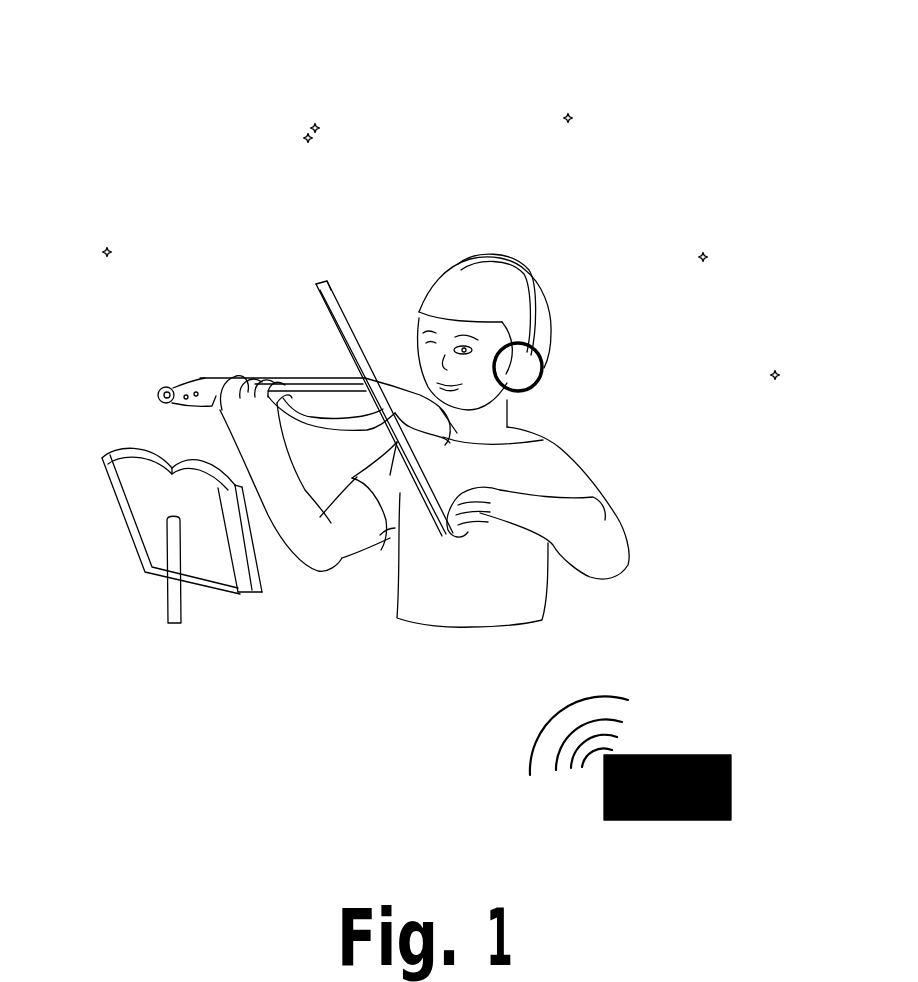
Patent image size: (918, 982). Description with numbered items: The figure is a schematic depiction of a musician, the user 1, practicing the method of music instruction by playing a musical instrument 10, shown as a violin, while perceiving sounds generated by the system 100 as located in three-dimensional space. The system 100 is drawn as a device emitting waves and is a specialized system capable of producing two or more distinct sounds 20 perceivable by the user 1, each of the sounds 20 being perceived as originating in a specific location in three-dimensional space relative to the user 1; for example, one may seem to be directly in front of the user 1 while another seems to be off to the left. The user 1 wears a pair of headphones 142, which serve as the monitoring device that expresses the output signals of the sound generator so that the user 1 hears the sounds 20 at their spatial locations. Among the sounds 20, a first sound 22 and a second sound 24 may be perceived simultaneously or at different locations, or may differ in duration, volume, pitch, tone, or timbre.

The user 1 is at (565, 448).
The musical instrument 10 is at (322, 380).
The audible sounds 20 is at (98, 238).
The first sound 22 is at (300, 127).
The second sound 24 is at (323, 122).
The system 100 is at (717, 752).
The headphones 142 is at (492, 258).